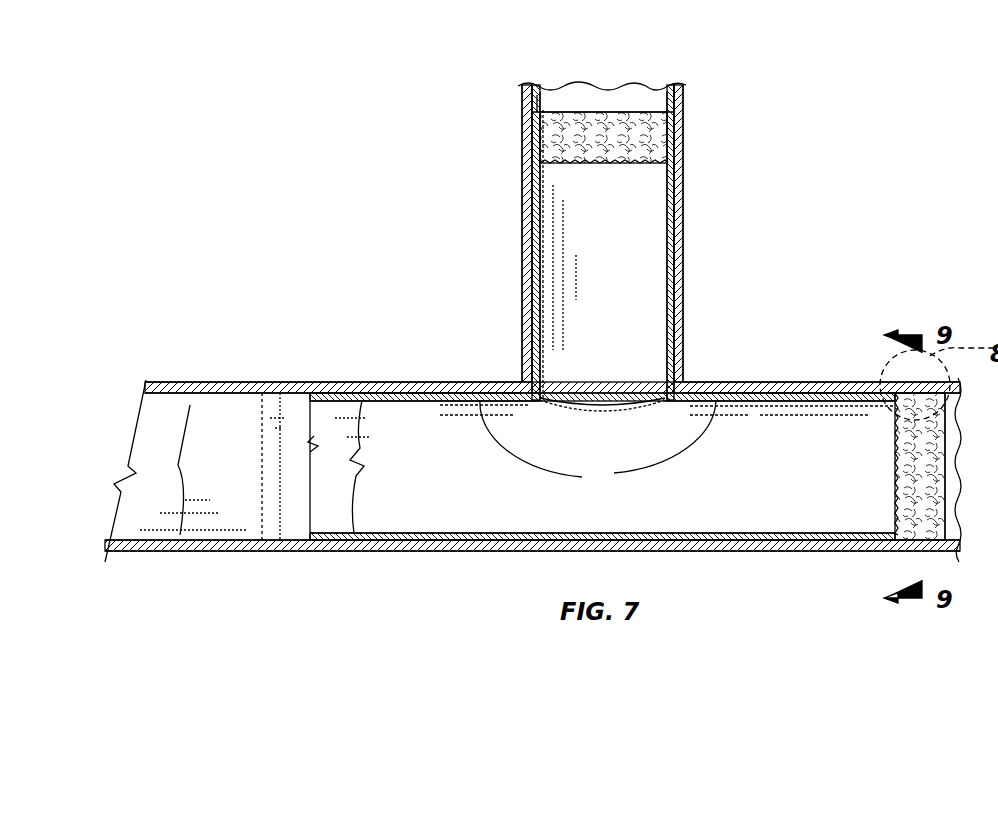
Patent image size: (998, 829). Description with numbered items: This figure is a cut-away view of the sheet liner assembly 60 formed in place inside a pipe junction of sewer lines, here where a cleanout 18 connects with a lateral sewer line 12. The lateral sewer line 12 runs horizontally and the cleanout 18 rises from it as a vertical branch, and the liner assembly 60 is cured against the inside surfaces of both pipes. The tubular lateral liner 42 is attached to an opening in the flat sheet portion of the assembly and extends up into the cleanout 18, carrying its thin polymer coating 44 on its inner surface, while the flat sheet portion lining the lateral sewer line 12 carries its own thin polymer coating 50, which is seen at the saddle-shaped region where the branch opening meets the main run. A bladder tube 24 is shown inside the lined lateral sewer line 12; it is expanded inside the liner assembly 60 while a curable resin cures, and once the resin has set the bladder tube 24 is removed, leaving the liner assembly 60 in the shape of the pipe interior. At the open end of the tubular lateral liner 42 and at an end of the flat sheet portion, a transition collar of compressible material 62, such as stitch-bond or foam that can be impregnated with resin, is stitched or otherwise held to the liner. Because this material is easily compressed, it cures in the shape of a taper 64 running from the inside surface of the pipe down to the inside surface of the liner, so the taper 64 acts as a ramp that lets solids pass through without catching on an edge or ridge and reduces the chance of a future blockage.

The lateral sewer line 12 is at (764, 552).
The cleanout 18 is at (522, 222).
The bladder tube 24 is at (333, 450).
The tubular lateral liner 42 is at (670, 258).
The thin polymer coating 44 is at (667, 346).
The thin polymer coating 50 is at (624, 528).
The liner assembly 60 is at (770, 434).
The compressible material 62 is at (600, 130).
The taper 64 is at (523, 140).